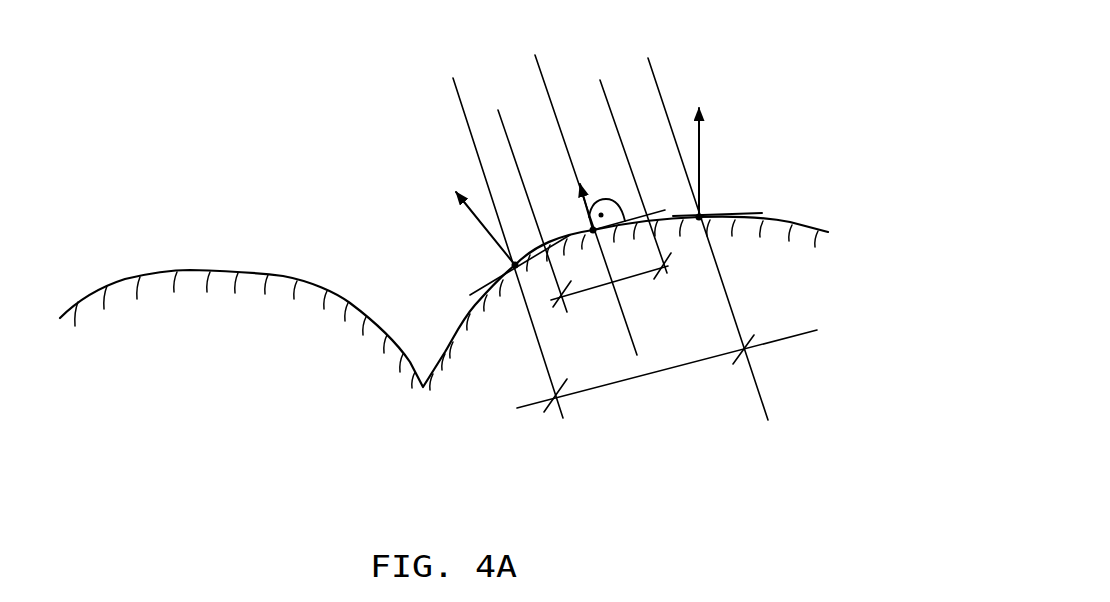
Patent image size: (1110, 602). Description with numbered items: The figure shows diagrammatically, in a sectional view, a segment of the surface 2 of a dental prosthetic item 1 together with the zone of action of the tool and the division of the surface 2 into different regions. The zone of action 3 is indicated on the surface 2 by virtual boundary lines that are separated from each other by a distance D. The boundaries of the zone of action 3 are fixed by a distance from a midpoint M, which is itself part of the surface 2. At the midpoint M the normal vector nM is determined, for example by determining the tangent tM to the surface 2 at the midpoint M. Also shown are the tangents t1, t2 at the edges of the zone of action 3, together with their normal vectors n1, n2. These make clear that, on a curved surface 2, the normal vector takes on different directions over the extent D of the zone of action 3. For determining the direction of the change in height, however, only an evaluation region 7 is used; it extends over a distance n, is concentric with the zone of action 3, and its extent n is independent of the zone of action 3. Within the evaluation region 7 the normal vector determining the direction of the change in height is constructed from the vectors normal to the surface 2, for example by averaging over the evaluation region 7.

The dental prosthetic item 1 is at (317, 358).
The surface 2 is at (297, 257).
The zone of action 3 is at (776, 332).
The evaluation region 7 is at (676, 278).
The extent of the evaluation region n is at (637, 261).
The distance between boundary lines of the zone of action D is at (667, 371).
The normal vector at the edge of the zone of action n1 is at (704, 134).
The normal vector at the edge of the zone of action n2 is at (474, 212).
The normal vector at the midpoint nM is at (550, 90).
The tangent at the edge of the zone of action t1 is at (729, 213).
The tangent at the edge of the zone of action t2 is at (487, 282).
The tangent at the midpoint tM is at (657, 208).
The midpoint M is at (585, 243).